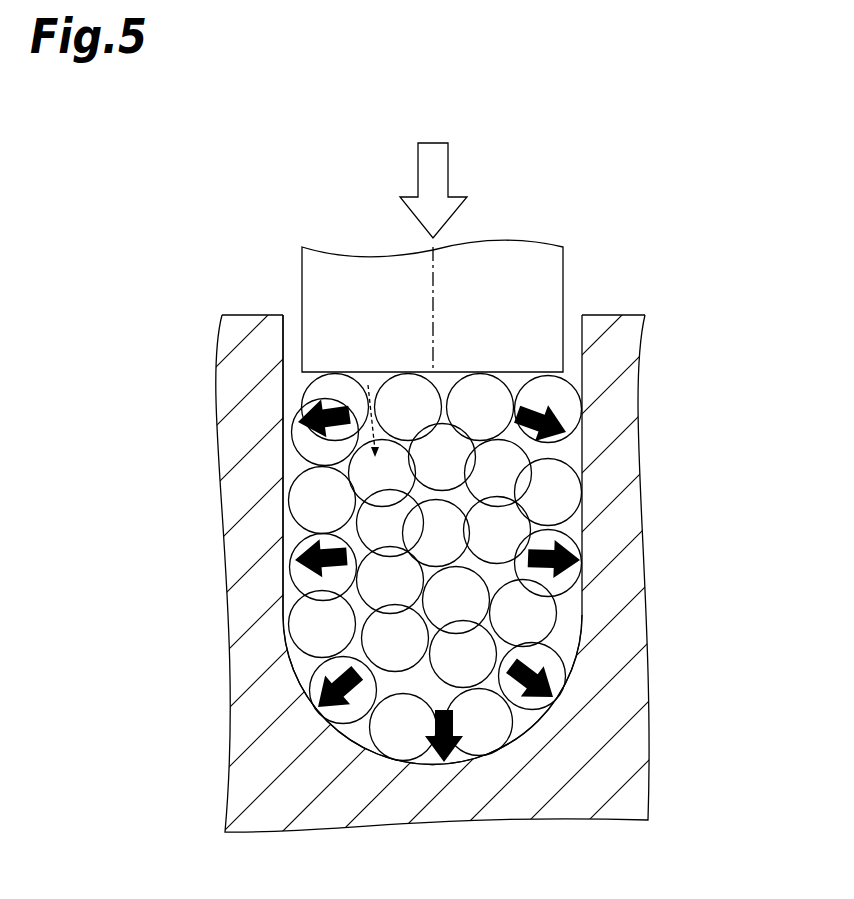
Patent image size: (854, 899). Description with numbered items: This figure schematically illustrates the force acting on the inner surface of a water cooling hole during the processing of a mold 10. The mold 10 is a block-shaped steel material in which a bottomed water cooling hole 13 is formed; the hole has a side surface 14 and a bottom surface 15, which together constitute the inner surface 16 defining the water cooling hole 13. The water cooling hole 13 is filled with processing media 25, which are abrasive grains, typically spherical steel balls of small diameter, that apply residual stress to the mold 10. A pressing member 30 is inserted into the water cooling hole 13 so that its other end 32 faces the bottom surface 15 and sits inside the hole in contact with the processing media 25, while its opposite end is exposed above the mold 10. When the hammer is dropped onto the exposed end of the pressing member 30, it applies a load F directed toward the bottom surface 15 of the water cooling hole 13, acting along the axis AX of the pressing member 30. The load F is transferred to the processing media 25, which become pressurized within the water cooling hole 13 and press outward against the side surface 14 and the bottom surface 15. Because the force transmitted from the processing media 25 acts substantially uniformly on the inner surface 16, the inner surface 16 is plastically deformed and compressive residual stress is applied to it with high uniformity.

The mold 10 is at (240, 733).
The water cooling hole 13 is at (367, 387).
The side surface 14 is at (295, 588).
The bottom surface 15 is at (462, 752).
The inner surface 16 is at (432, 540).
The processing media 25 is at (477, 592).
The pressing member 30 is at (549, 277).
The other end 32 is at (517, 388).
The load F is at (450, 169).
The axis AX is at (435, 262).